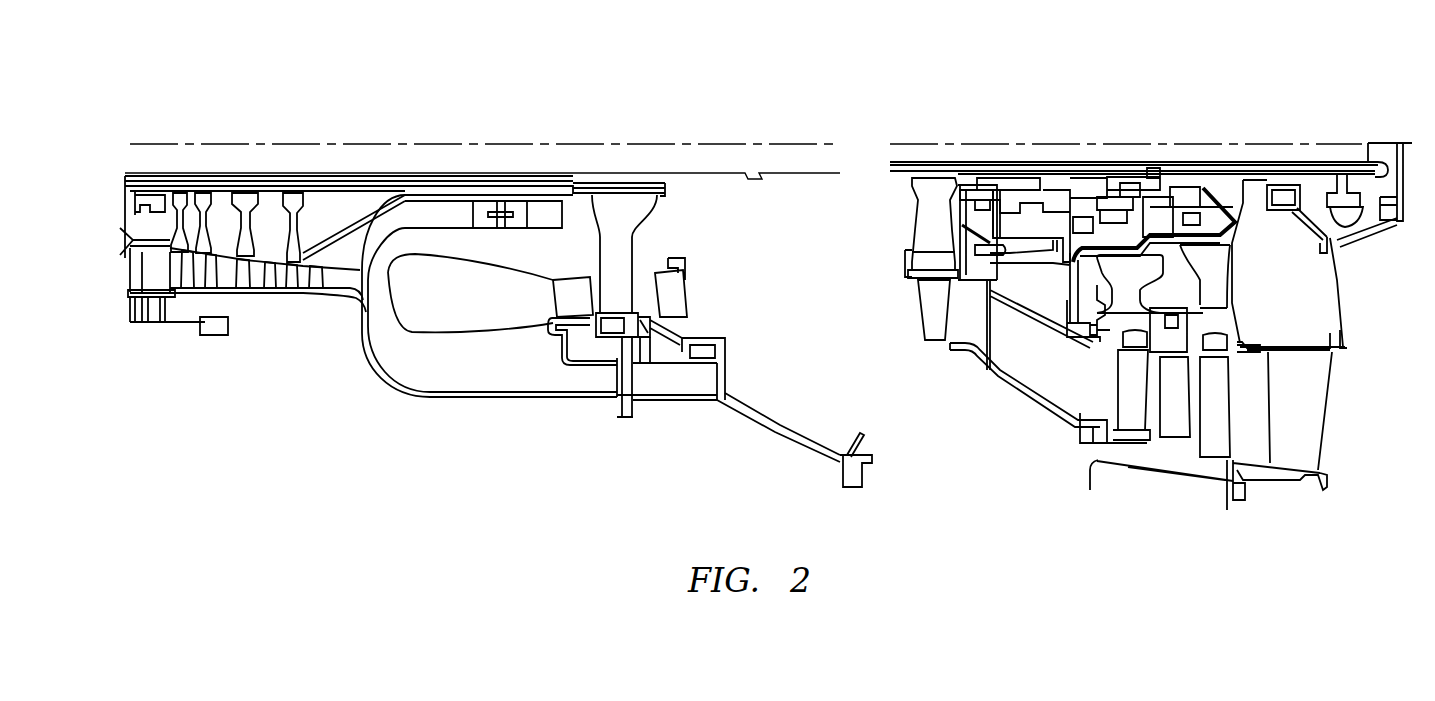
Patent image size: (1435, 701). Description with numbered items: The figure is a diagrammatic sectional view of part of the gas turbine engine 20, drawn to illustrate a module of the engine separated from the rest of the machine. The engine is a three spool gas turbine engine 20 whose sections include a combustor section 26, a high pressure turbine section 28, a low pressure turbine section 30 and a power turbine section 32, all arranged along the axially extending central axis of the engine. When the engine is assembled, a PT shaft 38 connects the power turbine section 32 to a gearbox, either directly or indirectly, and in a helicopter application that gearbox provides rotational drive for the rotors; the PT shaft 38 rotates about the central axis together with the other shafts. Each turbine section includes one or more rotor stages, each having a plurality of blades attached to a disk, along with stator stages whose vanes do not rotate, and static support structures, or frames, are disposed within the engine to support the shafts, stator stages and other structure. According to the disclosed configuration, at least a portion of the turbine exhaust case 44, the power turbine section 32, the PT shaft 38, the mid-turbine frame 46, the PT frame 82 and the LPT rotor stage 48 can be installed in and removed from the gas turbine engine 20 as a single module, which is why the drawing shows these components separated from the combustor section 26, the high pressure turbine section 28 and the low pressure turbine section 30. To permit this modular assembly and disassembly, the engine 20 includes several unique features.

The gas turbine engine 20 is at (800, 86).
The combustor section 26 is at (470, 303).
The high pressure turbine section 28 is at (611, 198).
The low pressure turbine section 30 is at (910, 134).
The power turbine section 32 is at (1275, 132).
The PT shaft 38 is at (1081, 165).
The turbine exhaust case 44 is at (926, 407).
The mid-turbine frame 46 is at (1110, 473).
The LPT rotor stage 48 is at (938, 192).
The PT frame 82 is at (1227, 497).